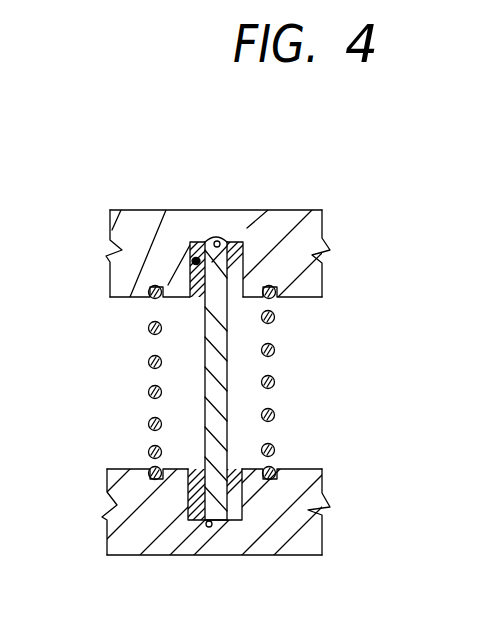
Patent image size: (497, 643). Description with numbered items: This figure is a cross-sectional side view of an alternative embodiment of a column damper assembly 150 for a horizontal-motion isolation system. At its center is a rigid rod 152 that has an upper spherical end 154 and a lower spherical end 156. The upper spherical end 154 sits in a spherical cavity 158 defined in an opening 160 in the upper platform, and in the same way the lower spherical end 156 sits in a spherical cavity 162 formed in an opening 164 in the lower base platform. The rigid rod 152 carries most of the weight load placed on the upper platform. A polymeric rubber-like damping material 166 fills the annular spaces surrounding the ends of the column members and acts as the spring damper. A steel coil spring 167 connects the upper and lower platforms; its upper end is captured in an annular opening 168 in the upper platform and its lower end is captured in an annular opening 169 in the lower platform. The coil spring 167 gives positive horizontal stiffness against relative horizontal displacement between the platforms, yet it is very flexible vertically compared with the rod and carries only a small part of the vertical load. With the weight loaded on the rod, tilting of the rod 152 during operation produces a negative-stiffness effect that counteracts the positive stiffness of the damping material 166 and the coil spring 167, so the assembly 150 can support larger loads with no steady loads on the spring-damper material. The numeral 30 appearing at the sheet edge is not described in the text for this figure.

The column damper assembly 150 is at (291, 407).
The rigid rod 152 is at (205, 376).
The upper spherical end 154 is at (229, 241).
The lower spherical end 156 is at (228, 522).
The spherical cavity 158 is at (214, 244).
The opening 160 is at (196, 262).
The spherical cavity 162 is at (210, 526).
The opening 164 is at (188, 498).
The polymeric rubber-like damping material 166 is at (243, 264).
The steel coil spring 167 is at (276, 351).
The annular opening 168 is at (154, 298).
The annular opening 169 is at (152, 466).
The adjacent component 30 is at (12, 625).